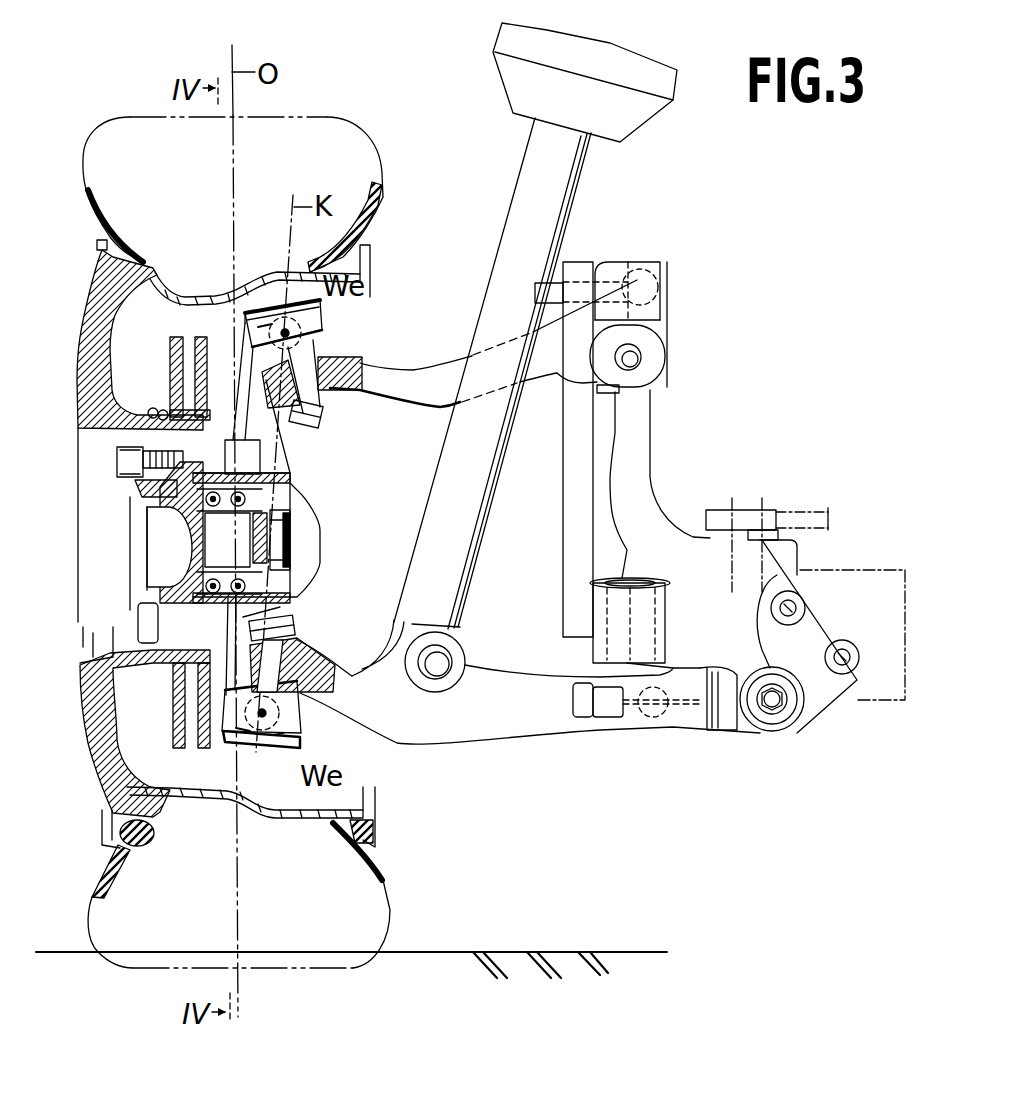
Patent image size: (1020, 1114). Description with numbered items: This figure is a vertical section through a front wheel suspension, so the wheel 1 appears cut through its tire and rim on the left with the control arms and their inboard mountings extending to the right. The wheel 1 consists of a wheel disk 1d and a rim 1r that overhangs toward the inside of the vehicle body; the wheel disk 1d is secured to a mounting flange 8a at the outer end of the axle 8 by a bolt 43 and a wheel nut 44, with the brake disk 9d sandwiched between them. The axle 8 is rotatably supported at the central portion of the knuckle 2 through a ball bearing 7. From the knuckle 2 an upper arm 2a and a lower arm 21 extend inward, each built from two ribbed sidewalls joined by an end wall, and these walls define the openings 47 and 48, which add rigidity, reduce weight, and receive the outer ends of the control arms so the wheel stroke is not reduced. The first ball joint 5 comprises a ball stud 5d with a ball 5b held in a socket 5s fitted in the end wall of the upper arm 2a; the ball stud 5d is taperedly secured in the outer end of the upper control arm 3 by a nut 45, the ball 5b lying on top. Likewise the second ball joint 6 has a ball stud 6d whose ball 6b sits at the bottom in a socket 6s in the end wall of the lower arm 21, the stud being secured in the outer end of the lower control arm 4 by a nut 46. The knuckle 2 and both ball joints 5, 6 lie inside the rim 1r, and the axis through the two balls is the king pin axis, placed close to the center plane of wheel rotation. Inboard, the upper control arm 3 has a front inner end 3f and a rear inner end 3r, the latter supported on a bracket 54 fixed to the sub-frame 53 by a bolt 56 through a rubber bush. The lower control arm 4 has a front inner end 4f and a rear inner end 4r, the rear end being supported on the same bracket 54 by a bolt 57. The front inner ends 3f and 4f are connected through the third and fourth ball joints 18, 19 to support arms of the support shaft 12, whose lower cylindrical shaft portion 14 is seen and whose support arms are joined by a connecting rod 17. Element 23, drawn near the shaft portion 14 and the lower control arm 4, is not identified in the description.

The wheel 1 is at (78, 312).
The rim 1r is at (190, 292).
The wheel disk 1d is at (80, 372).
The knuckle 2 is at (290, 487).
The upper arm 2a is at (243, 320).
The upper control arm 3 is at (415, 366).
The front inner end 3f is at (640, 273).
The rear inner end 3r is at (660, 358).
The lower control arm 4 is at (527, 678).
The front inner end 4f is at (681, 742).
The rear inner end 4r is at (762, 731).
The first ball joint 5 is at (296, 298).
The ball 5b is at (318, 313).
The ball stud 5d is at (346, 359).
The socket 5s is at (264, 318).
The second ball joint 6 is at (236, 740).
The ball 6b is at (272, 747).
The ball stud 6d is at (306, 688).
The socket 6s is at (258, 755).
The ball bearing 7 is at (242, 457).
The axle 8 is at (210, 536).
The mounting flange 8a is at (173, 433).
The brake disk 9d is at (172, 352).
The support shaft 12 is at (560, 522).
The cylindrical shaft portion 14 is at (664, 641).
The connecting rod 17 is at (566, 472).
The third ball joint 18 is at (647, 260).
The fourth ball joint 19 is at (642, 737).
The lower arm 21 is at (301, 740).
The spring seat 23 is at (622, 580).
The bolt 43 is at (140, 484).
The wheel nut 44 is at (120, 462).
The nut 45 is at (322, 414).
The nut 46 is at (296, 640).
The opening 47 is at (247, 375).
The opening 48 is at (185, 662).
The sub-frame 53 is at (862, 570).
The bracket 54 is at (637, 448).
The bolt 56 is at (628, 363).
The bolt 57 is at (777, 720).